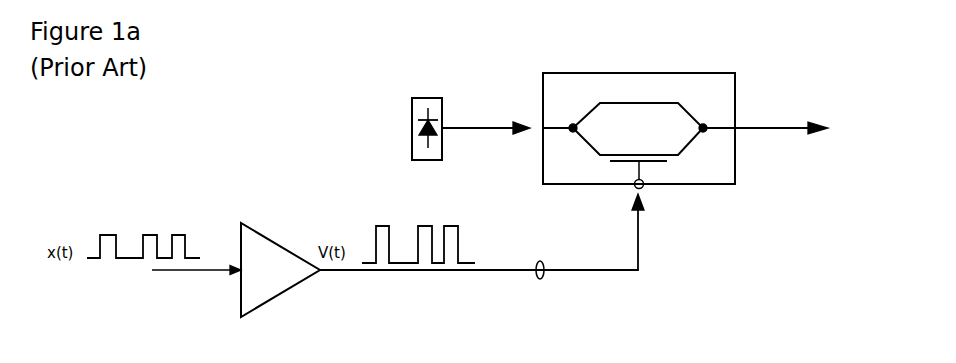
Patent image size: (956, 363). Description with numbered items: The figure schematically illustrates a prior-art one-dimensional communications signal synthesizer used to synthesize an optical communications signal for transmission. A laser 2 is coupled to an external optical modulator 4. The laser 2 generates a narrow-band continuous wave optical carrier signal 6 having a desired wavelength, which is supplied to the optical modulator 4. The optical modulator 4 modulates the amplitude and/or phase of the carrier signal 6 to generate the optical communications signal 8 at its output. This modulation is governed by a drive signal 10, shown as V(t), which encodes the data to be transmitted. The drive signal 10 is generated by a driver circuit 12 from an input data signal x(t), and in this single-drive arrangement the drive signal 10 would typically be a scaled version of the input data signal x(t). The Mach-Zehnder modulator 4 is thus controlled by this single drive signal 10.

The laser 2 is at (425, 98).
The optical modulator 4 is at (705, 73).
The carrier signal 6 is at (475, 128).
The optical communications signal 8 is at (797, 128).
The drive signal 10 is at (542, 261).
The driver circuit 12 is at (272, 243).